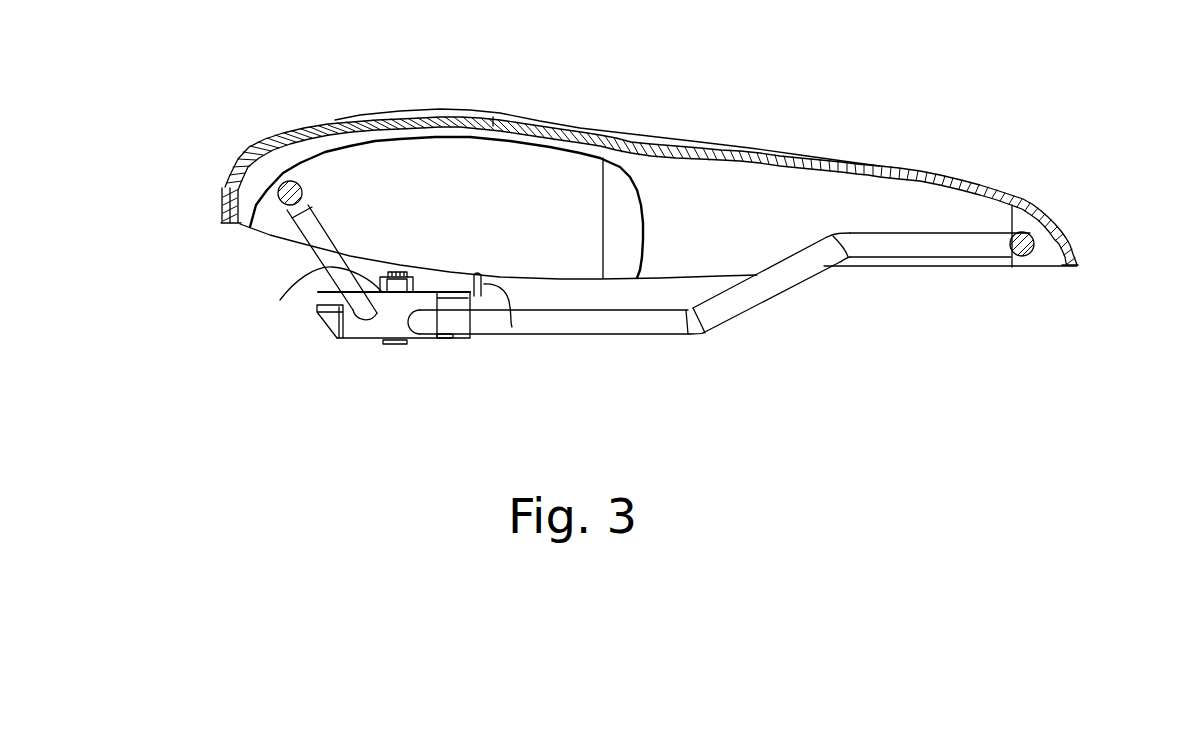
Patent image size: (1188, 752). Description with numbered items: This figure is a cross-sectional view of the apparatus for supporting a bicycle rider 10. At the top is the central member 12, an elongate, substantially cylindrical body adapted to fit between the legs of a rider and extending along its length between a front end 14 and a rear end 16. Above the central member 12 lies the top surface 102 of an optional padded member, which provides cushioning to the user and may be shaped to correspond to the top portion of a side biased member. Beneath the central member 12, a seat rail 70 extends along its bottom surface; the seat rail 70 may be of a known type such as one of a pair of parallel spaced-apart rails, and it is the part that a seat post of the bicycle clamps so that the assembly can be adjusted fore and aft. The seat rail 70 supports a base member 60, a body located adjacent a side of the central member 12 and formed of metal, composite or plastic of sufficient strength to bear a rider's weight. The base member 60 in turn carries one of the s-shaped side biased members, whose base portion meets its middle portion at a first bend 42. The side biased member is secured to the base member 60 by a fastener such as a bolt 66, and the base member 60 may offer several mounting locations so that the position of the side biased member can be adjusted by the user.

The apparatus for supporting a bicycle rider 10 is at (812, 67).
The central member 12 is at (957, 180).
The front end 14 is at (1081, 244).
The rear end 16 is at (220, 196).
The first bend 42 is at (512, 327).
The base member 60 is at (393, 330).
The bolt 66 is at (305, 282).
The seat rail 70 is at (697, 335).
The top surface 102 is at (453, 105).